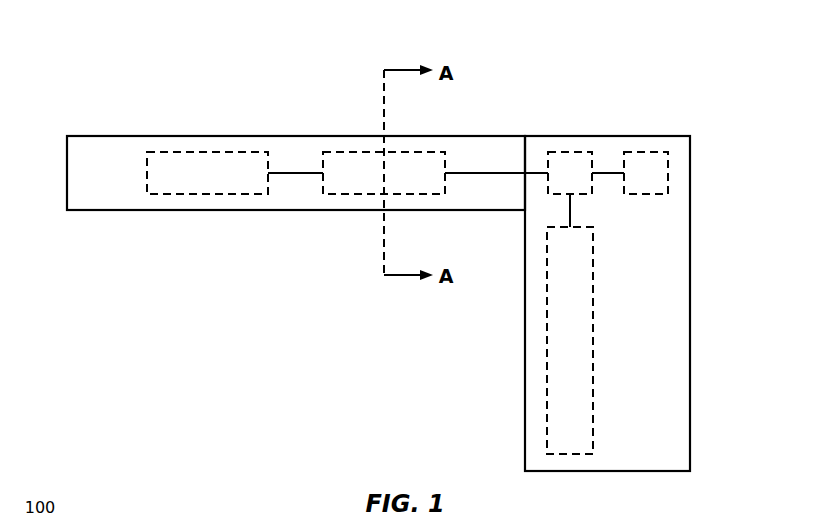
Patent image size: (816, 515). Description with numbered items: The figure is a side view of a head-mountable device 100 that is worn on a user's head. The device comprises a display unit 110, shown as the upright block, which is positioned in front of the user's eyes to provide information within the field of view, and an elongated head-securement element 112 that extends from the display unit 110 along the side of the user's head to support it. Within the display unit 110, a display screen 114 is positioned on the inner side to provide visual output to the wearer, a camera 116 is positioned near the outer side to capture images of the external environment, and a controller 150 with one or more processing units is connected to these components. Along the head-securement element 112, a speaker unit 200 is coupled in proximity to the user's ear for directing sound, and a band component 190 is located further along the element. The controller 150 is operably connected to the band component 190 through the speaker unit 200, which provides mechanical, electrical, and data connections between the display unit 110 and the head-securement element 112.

The head-mountable device 100 is at (178, 108).
The display unit 110 is at (643, 136).
The head-securement element 112 is at (293, 136).
The display screen 114 is at (547, 337).
The camera 116 is at (663, 180).
The controller 150 is at (563, 150).
The band component 190 is at (203, 197).
The speaker unit 200 is at (400, 150).